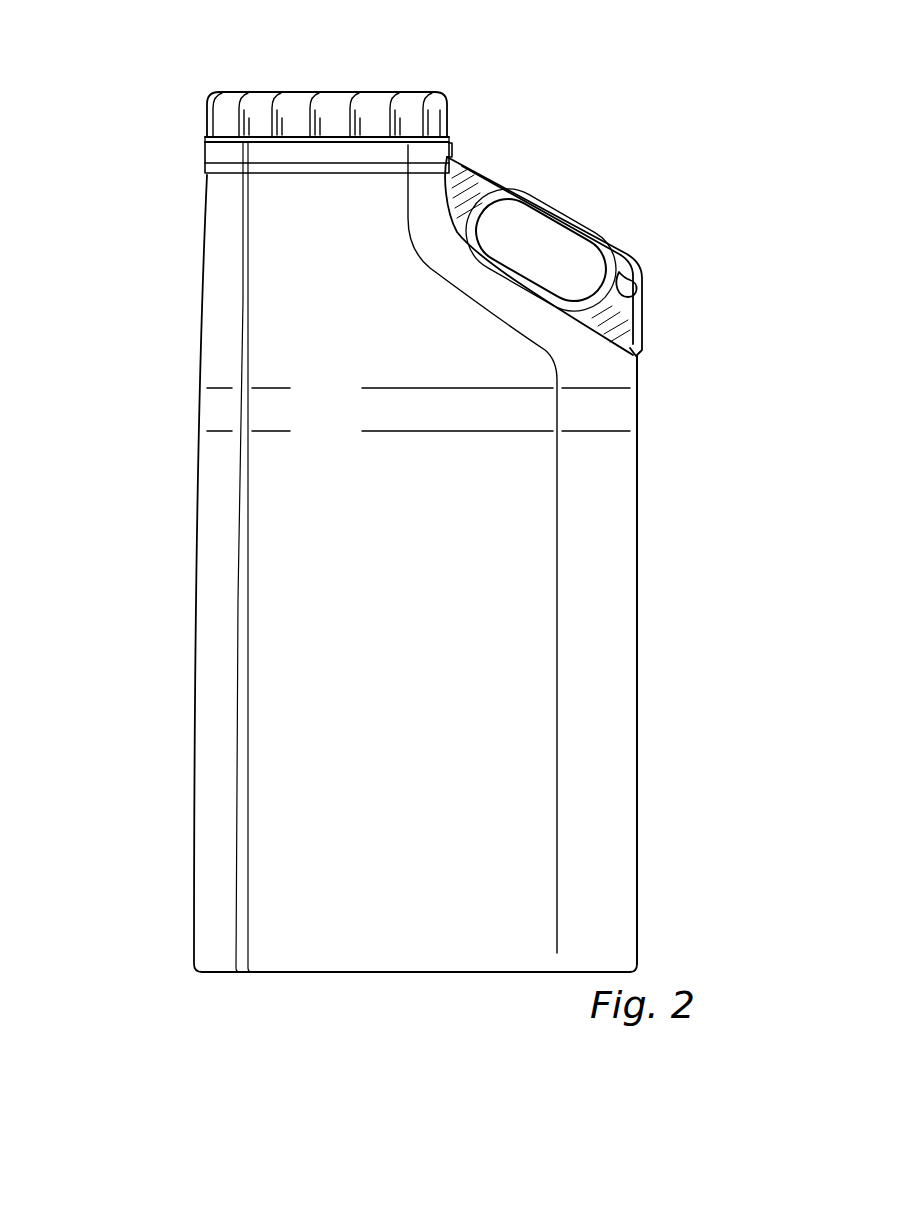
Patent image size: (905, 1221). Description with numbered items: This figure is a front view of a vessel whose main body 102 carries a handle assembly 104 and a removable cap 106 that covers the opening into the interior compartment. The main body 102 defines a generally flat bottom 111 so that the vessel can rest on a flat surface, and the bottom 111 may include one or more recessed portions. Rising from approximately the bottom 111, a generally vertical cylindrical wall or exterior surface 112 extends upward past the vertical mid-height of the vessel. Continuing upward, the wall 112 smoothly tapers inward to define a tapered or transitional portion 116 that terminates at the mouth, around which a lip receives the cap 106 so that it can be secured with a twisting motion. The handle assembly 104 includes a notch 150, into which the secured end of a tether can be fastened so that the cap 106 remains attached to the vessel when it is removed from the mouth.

The main body 102 is at (510, 582).
The handle assembly 104 is at (577, 196).
The removable cap 106 is at (368, 100).
The bottom 111 is at (225, 972).
The exterior surface 112 is at (637, 650).
The transitional portion 116 is at (297, 262).
The notch 150 is at (637, 288).